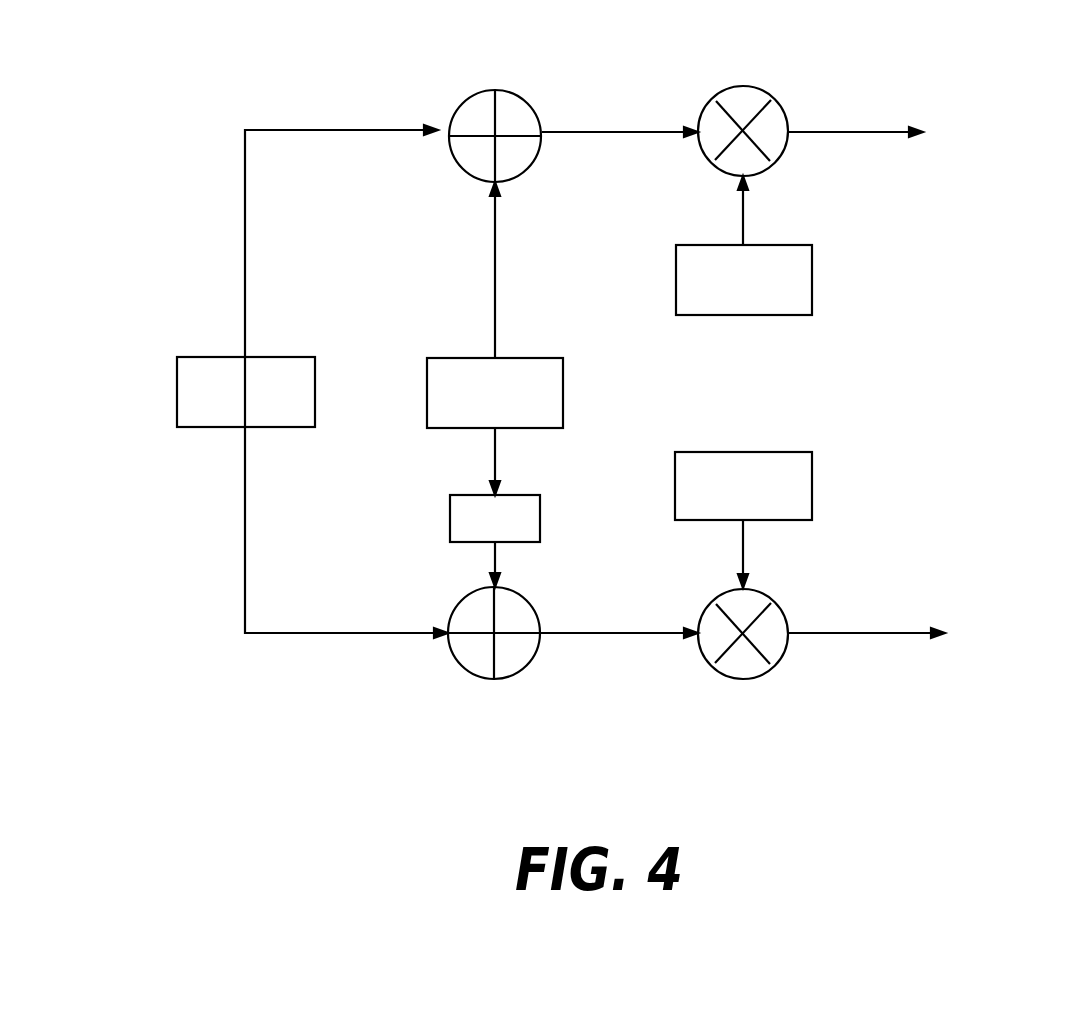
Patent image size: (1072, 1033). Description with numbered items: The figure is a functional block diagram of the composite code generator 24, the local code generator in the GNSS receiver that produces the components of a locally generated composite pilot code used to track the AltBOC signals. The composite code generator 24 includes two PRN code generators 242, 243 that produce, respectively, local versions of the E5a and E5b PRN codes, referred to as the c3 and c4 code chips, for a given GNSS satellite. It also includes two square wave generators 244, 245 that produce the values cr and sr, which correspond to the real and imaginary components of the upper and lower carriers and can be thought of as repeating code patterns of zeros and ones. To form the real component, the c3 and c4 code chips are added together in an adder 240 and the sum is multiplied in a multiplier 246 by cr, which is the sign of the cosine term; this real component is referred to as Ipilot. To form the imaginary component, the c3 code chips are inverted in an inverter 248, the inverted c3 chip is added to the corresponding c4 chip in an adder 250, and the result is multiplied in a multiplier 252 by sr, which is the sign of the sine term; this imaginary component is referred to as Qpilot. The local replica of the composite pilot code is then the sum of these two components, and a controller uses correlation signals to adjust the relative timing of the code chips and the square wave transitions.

The composite code generator 24 is at (544, 382).
The adder 240 is at (535, 113).
The c3 PRN code generator 242 is at (193, 383).
The c4 PRN code generator 243 is at (557, 388).
The square wave generator 244 is at (806, 274).
The square wave generator 245 is at (806, 479).
The multiplier 246 is at (784, 107).
The inverter 248 is at (442, 509).
The adder 250 is at (442, 623).
The multiplier 252 is at (800, 626).